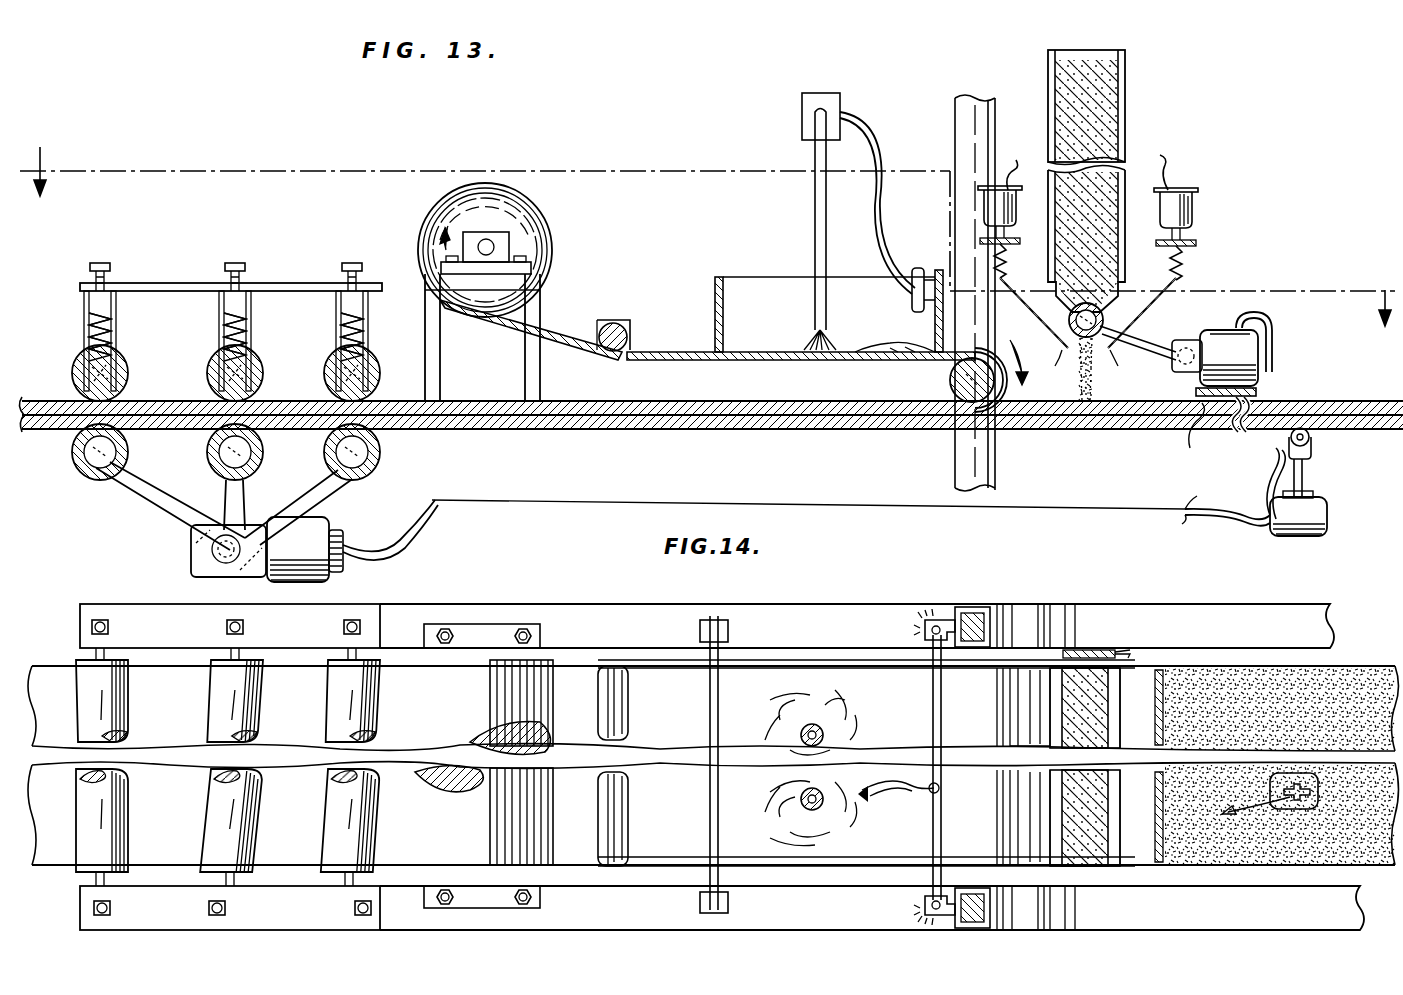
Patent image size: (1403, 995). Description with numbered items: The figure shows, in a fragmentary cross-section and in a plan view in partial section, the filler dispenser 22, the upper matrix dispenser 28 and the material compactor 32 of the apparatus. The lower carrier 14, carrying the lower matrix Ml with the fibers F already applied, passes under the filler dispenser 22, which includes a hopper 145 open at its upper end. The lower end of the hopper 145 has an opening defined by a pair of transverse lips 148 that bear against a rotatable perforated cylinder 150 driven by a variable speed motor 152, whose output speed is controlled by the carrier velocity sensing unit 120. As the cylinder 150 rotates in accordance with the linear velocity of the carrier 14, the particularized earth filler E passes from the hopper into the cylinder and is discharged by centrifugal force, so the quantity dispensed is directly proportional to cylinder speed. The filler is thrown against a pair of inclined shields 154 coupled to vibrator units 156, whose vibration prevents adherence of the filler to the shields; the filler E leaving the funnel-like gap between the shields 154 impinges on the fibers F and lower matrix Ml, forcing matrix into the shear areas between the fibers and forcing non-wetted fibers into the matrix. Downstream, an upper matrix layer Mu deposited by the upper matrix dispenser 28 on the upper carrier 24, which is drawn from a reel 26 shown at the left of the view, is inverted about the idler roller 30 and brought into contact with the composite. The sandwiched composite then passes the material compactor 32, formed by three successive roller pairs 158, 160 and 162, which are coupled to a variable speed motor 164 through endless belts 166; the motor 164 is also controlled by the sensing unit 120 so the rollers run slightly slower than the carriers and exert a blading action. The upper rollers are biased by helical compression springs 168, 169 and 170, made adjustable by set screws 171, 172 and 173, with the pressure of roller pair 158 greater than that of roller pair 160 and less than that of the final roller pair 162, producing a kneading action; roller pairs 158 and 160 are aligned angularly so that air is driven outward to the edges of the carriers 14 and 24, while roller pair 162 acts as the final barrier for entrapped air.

In FIG. 13, the lower carrier 14 is at (432, 430).
In FIG. 14, the lower carrier 14 is at (713, 765).
In FIG. 13, the filler dispenser 22 is at (1132, 181).
In FIG. 13, the upper carrier 24 is at (560, 348).
In FIG. 14, the upper carrier 24 is at (590, 808).
In FIG. 13, the reel 26 is at (545, 235).
In FIG. 14, the reel 26 is at (533, 710).
In FIG. 13, the upper matrix dispenser 28 is at (762, 278).
In FIG. 14, the upper matrix dispenser 28 is at (756, 670).
In FIG. 13, the idler roller 30 is at (950, 380).
In FIG. 13, the material compactor 32 is at (158, 268).
In FIG. 14, the material compactor 32 is at (395, 642).
In FIG. 13, the carrier velocity sensing unit 120 is at (1310, 508).
In FIG. 14, the carrier velocity sensing unit 120 is at (1318, 838).
In FIG. 13, the hopper 145 is at (1125, 135).
In FIG. 14, the hopper 145 is at (1112, 720).
In FIG. 13, the transverse lips 148 is at (1058, 310).
In FIG. 13, the perforated cylinder 150 is at (1104, 330).
In FIG. 13, the variable speed motor 152 is at (1240, 342).
In FIG. 13, the inclined shields 154 is at (1060, 366).
In FIG. 14, the inclined shields 154 is at (1040, 818).
In FIG. 13, the vibrator units 156 is at (1000, 176).
In FIG. 13, the first roller pair 158 is at (364, 380).
In FIG. 14, the first roller pair 158 is at (372, 705).
In FIG. 13, the second roller pair 160 is at (258, 388).
In FIG. 14, the second roller pair 160 is at (232, 828).
In FIG. 13, the final roller pair 162 is at (120, 380).
In FIG. 14, the final roller pair 162 is at (120, 705).
In FIG. 13, the variable speed motor 164 is at (318, 562).
In FIG. 13, the endless belts 166 is at (174, 498).
In FIG. 13, the helical compression spring 168 is at (370, 332).
In FIG. 13, the helical compression spring 169 is at (246, 328).
In FIG. 13, the helical compression spring 170 is at (112, 338).
In FIG. 13, the set screw 171 is at (354, 262).
In FIG. 14, the set screw 171 is at (344, 624).
In FIG. 13, the set screw 172 is at (238, 262).
In FIG. 14, the set screw 172 is at (226, 624).
In FIG. 13, the set screw 173 is at (103, 262).
In FIG. 14, the set screw 173 is at (100, 618).
In FIG. 13, the particularized earth filler E is at (1096, 398).
In FIG. 13, the fibers F is at (1302, 424).
In FIG. 13, the upper matrix layer Mu is at (1019, 355).
In FIG. 13, the lower matrix Ml is at (1204, 435).